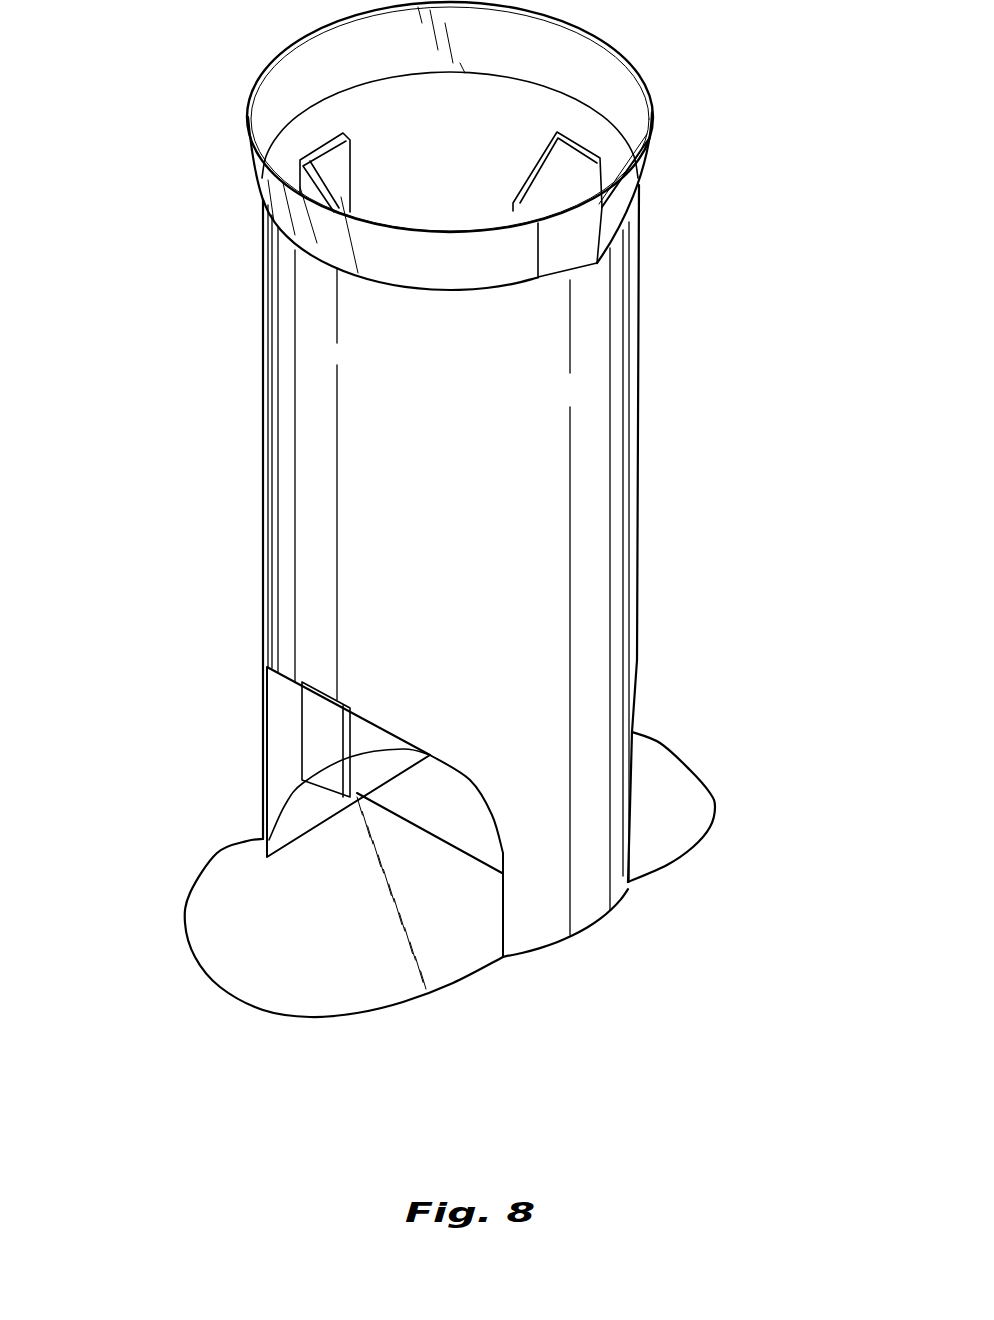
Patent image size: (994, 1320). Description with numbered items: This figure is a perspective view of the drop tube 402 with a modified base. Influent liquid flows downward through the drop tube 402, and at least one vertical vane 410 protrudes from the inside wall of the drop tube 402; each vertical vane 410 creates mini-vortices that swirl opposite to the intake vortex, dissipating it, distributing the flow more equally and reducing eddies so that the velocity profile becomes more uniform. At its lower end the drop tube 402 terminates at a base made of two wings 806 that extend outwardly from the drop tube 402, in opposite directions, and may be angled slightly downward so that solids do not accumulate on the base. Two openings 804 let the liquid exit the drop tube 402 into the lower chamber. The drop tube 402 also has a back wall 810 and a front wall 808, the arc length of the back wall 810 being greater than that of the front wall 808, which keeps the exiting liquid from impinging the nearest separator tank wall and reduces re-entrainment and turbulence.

The drop tube 402 is at (660, 212).
The vertical vane 410 is at (590, 148).
The opening 804 is at (408, 863).
The wing 806 is at (408, 1000).
The front wall 808 is at (557, 905).
The back wall 810 is at (280, 700).